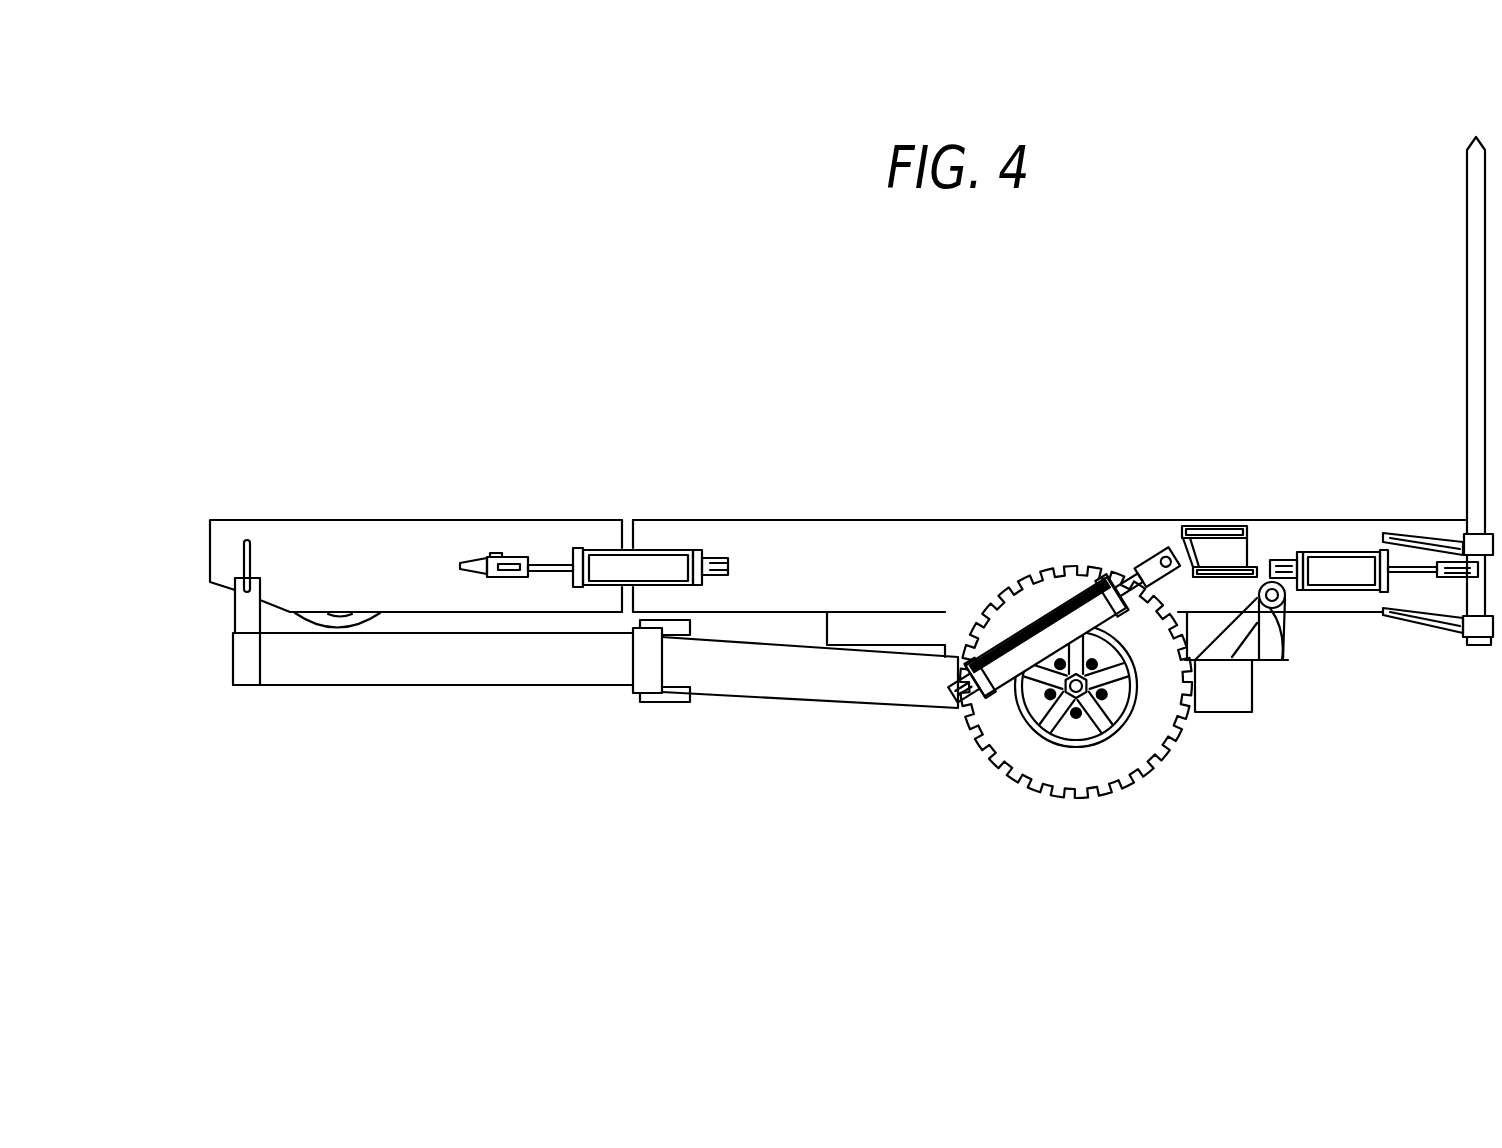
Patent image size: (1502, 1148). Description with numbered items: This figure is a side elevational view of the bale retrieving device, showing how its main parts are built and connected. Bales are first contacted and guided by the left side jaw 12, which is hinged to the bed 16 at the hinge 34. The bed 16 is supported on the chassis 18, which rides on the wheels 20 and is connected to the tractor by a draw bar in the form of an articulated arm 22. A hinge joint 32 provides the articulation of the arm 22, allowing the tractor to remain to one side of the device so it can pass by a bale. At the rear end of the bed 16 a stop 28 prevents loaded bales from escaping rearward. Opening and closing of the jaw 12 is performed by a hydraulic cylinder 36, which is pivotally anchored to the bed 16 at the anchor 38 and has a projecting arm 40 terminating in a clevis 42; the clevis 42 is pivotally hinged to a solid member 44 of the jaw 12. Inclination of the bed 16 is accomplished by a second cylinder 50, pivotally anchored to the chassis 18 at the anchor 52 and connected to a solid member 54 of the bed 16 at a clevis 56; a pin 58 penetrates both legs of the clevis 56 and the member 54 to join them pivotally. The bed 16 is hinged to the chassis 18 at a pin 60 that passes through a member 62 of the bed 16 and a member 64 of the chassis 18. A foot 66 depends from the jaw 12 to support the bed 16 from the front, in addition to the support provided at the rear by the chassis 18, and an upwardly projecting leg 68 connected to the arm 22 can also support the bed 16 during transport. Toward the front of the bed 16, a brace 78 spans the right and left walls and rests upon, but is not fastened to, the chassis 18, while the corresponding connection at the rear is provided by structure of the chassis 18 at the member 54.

The left side jaw 12 is at (297, 520).
The bed 16 is at (898, 428).
The chassis 18 is at (1208, 703).
The wheels 20 is at (1117, 777).
The articulated arm 22 is at (505, 668).
The stop 28 is at (1470, 238).
The hinge joint 32 is at (650, 663).
The hinge 34 is at (621, 478).
The cylinder 36 is at (660, 570).
The pivotal anchor 38 is at (708, 514).
The projecting arm 40 is at (553, 565).
The clevis 42 is at (520, 558).
The solid member 44 is at (484, 560).
The cylinder 50 is at (1083, 617).
The pivotal anchor 52 is at (937, 736).
The solid member 54 is at (1183, 527).
The clevis 56 is at (1132, 532).
The pin 58 is at (1152, 578).
The pin 60 is at (1287, 662).
The member 62 is at (1248, 566).
The member 64 is at (1280, 632).
The foot 66 is at (342, 622).
The leg 68 is at (250, 609).
The brace 78 is at (867, 637).